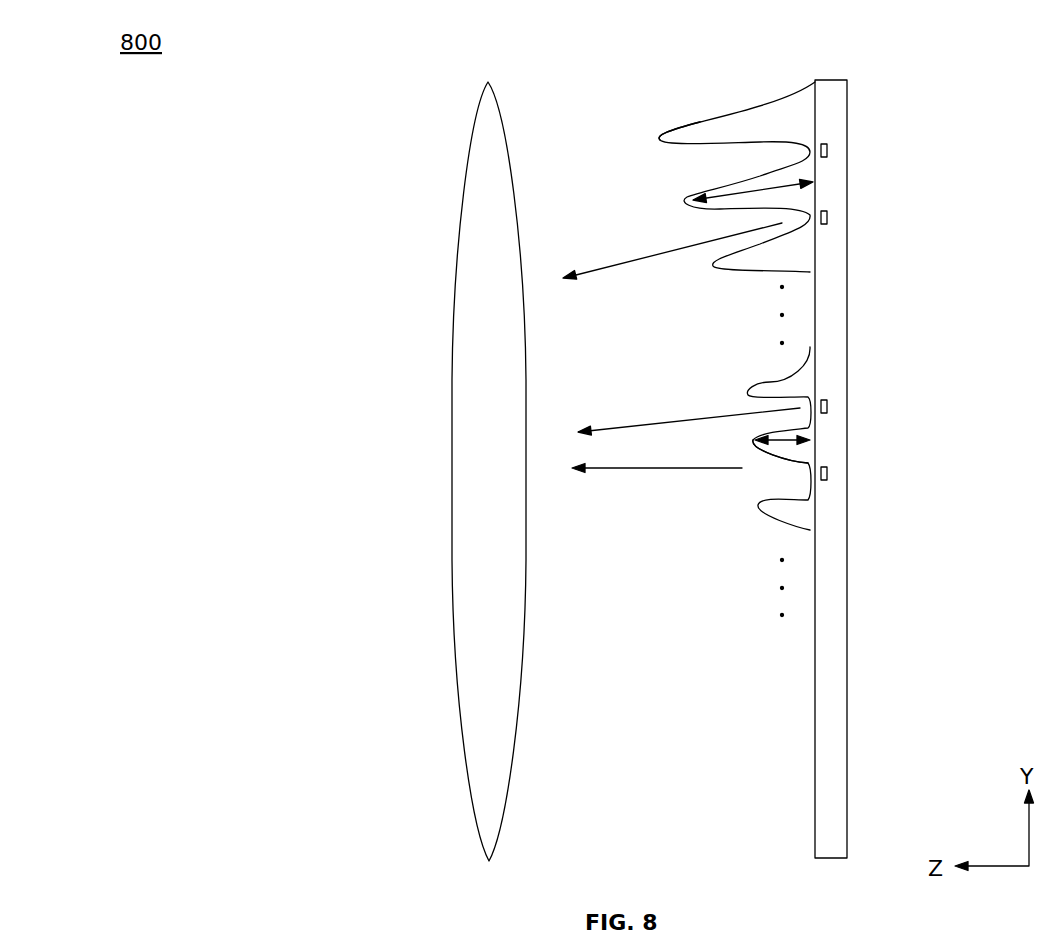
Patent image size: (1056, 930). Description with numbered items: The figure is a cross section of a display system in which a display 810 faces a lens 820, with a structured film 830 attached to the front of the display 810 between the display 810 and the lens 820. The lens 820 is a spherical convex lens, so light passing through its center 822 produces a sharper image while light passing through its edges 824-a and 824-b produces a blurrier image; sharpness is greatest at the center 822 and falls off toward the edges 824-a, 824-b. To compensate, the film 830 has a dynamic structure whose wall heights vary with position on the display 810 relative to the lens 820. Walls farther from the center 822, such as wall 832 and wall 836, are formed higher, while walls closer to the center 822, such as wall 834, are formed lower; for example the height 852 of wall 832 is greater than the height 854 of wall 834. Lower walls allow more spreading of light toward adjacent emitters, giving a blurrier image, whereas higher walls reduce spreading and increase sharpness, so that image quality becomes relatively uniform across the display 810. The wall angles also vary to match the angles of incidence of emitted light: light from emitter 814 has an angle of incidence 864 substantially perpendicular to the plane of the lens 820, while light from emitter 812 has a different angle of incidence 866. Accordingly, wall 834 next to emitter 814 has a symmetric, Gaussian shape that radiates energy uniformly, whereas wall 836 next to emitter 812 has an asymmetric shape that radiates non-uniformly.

The display 810 is at (826, 88).
The emitter 812 is at (828, 403).
The emitter 814 is at (828, 470).
The lens 820 is at (452, 360).
The center 822 is at (476, 466).
The edge 824-a is at (476, 80).
The edge 824-b is at (476, 864).
The structured film 830 is at (688, 76).
The wall 832 is at (683, 200).
The wall 834 is at (757, 456).
The wall 836 is at (748, 392).
The height 852 is at (745, 192).
The height 854 is at (783, 442).
The angle of incidence 864 is at (620, 473).
The angle of incidence 866 is at (633, 423).